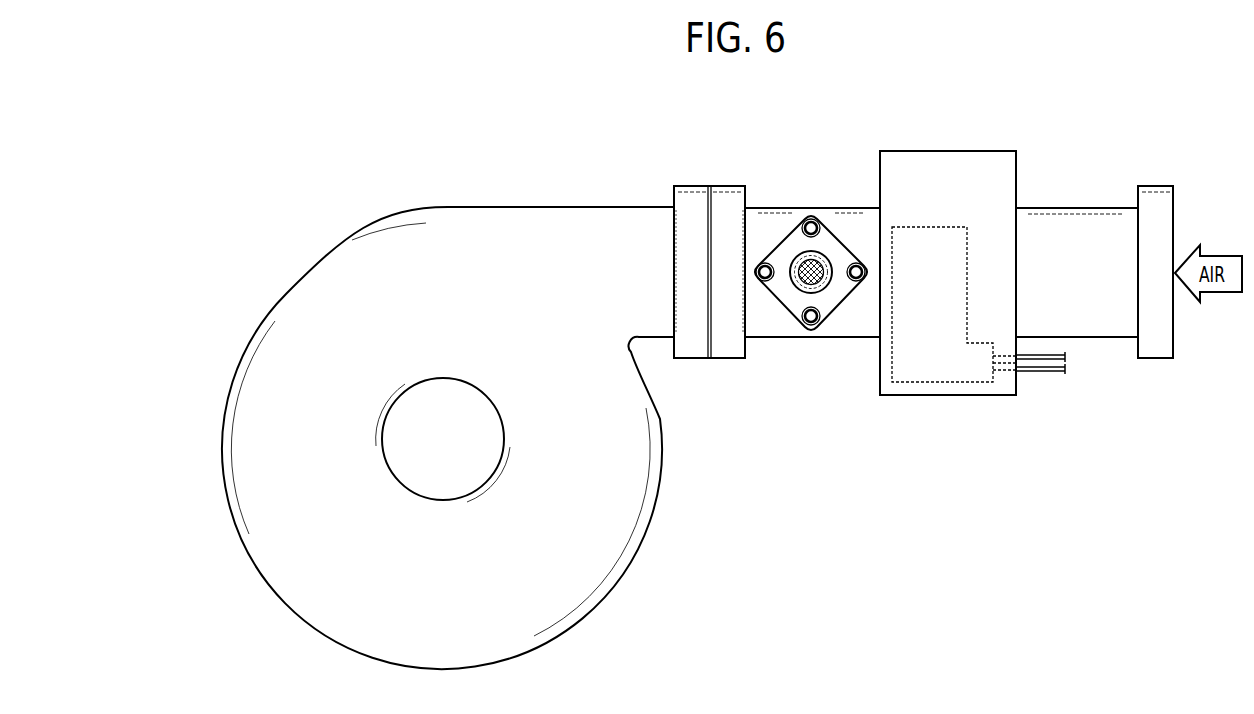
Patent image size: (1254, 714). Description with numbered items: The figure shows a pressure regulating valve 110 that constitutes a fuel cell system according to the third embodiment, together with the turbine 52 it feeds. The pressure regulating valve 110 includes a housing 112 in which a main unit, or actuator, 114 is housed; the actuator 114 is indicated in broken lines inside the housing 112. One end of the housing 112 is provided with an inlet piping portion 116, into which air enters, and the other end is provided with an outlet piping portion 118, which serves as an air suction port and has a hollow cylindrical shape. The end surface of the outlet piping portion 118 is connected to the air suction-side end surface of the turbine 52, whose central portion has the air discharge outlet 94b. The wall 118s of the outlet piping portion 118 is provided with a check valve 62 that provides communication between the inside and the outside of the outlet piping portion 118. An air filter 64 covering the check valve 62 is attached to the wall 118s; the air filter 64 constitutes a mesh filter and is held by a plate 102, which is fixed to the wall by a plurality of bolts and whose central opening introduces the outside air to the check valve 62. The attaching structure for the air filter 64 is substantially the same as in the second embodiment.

The turbine 52 is at (330, 238).
The air discharge outlet 94b is at (445, 484).
The pressure regulating valve 110 is at (1122, 178).
The housing 112 is at (980, 160).
The main unit (actuator) 114 is at (913, 373).
The inlet piping portion 116 is at (1082, 222).
The outlet piping portion (air suction port) 118 is at (846, 200).
The wall of the outlet piping portion 118s is at (778, 236).
The plate 102 is at (783, 293).
The air filter 64 is at (801, 290).
The check valve 62 is at (818, 288).